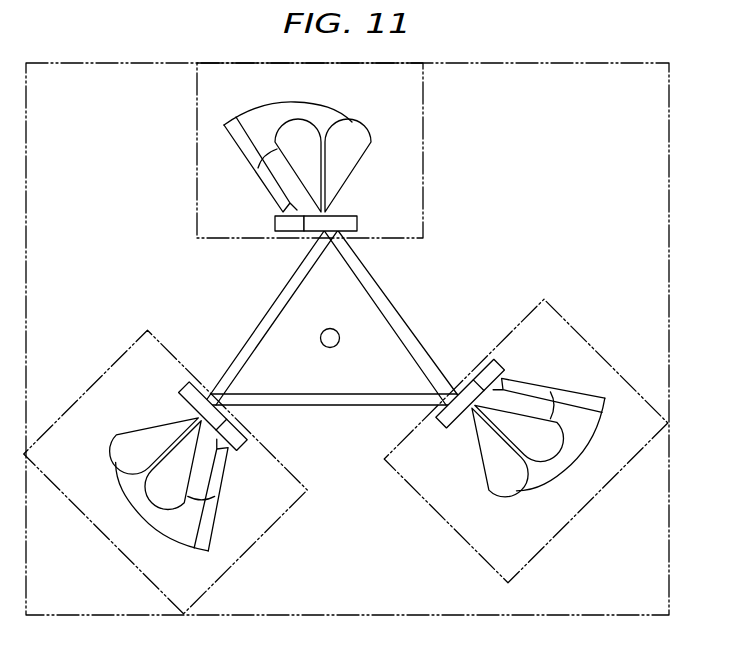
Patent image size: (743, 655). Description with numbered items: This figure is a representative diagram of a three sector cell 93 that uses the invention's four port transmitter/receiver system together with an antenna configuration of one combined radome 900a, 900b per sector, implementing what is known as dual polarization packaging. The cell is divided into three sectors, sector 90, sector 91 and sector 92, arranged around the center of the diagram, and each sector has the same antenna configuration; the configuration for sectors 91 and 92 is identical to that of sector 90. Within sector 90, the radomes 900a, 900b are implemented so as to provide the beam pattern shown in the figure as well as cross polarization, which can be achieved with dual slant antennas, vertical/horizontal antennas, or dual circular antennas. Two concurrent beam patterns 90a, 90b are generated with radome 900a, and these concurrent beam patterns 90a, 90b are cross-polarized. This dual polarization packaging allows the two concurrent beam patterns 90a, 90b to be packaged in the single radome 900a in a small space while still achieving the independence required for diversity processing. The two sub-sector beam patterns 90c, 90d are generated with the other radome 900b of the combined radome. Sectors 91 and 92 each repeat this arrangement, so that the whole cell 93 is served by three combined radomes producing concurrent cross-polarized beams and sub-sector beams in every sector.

The sector 90 is at (425, 98).
The concurrent beam pattern 90a is at (247, 112).
The concurrent beam pattern 90b is at (316, 104).
The sub-sector beam pattern 90c is at (258, 170).
The sub-sector beam pattern 90d is at (363, 157).
The radome 900a is at (284, 232).
The radome 900b is at (358, 228).
The sector 91 is at (567, 320).
The sector 92 is at (134, 348).
The three sector cell 93 is at (676, 97).